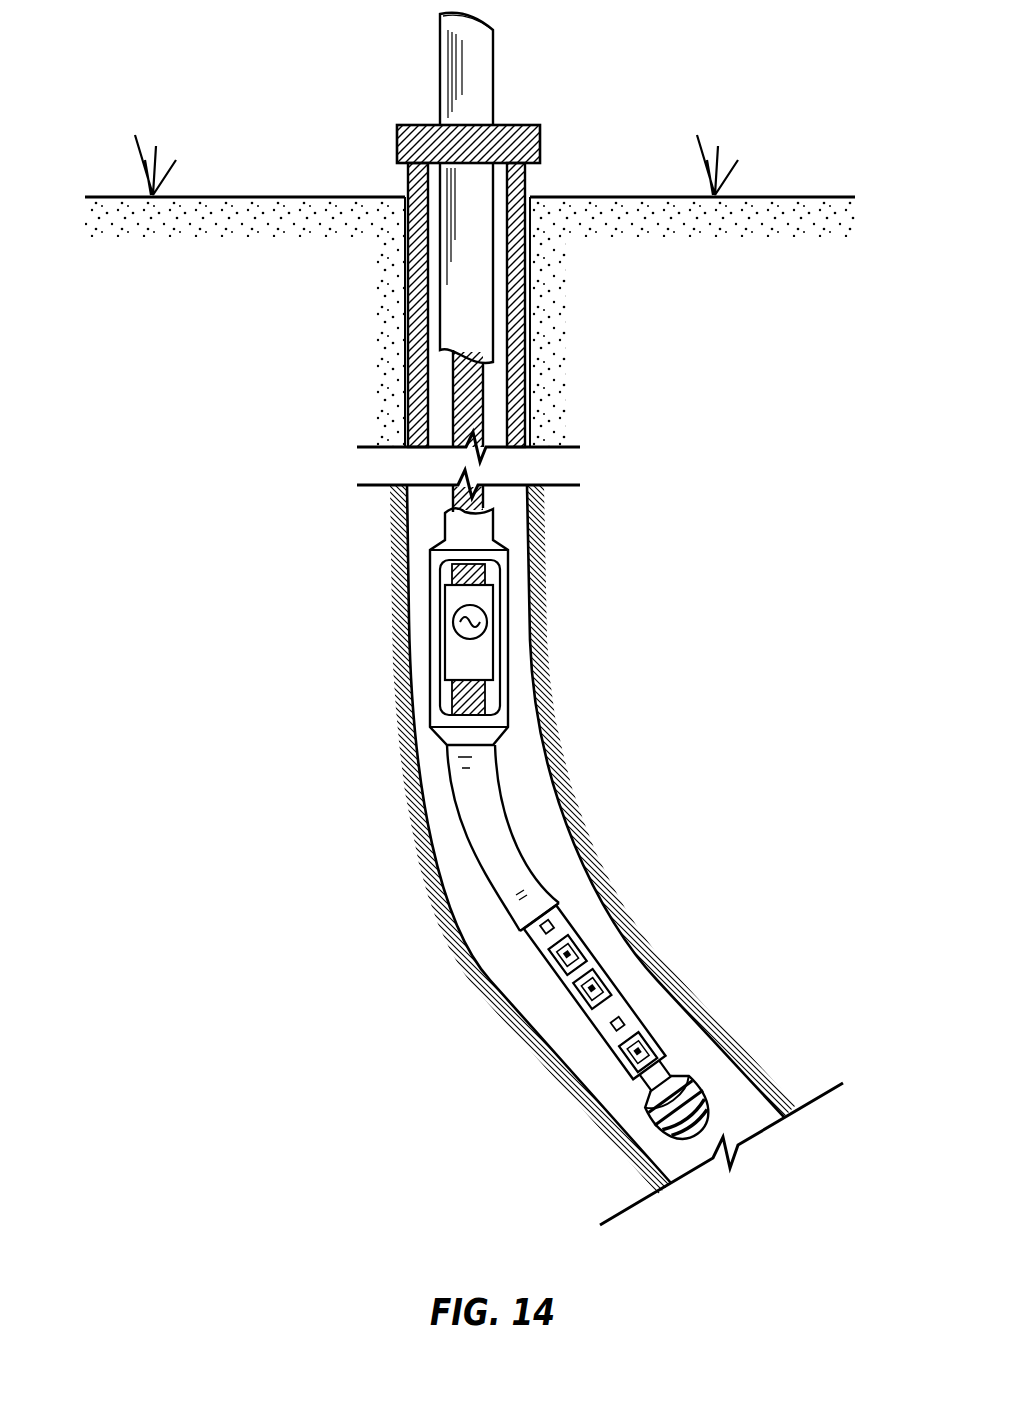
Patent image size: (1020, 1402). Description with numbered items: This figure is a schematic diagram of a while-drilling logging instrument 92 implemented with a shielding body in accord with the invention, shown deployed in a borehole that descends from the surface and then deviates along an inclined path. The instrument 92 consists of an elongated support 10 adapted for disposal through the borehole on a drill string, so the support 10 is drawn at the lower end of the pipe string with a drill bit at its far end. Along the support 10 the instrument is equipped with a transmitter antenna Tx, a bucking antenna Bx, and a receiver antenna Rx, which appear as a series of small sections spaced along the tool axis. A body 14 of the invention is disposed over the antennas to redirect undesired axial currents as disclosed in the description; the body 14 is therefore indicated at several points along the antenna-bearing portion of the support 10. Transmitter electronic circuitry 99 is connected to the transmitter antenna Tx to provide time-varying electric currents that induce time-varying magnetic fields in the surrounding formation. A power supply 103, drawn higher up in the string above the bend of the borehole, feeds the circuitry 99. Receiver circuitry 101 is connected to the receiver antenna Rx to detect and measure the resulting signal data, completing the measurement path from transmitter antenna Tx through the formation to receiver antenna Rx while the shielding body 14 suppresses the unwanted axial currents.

The elongated support 10 is at (555, 1025).
The body 14 is at (653, 1035).
The logging instrument 92 is at (614, 958).
The transmitter electronic circuitry 99 is at (547, 927).
The receiver circuitry 101 is at (618, 1024).
The power supply 103 is at (456, 667).
The transmitter antenna Tx is at (568, 955).
The bucking antenna Bx is at (592, 989).
The receiver antenna Rx is at (638, 1052).